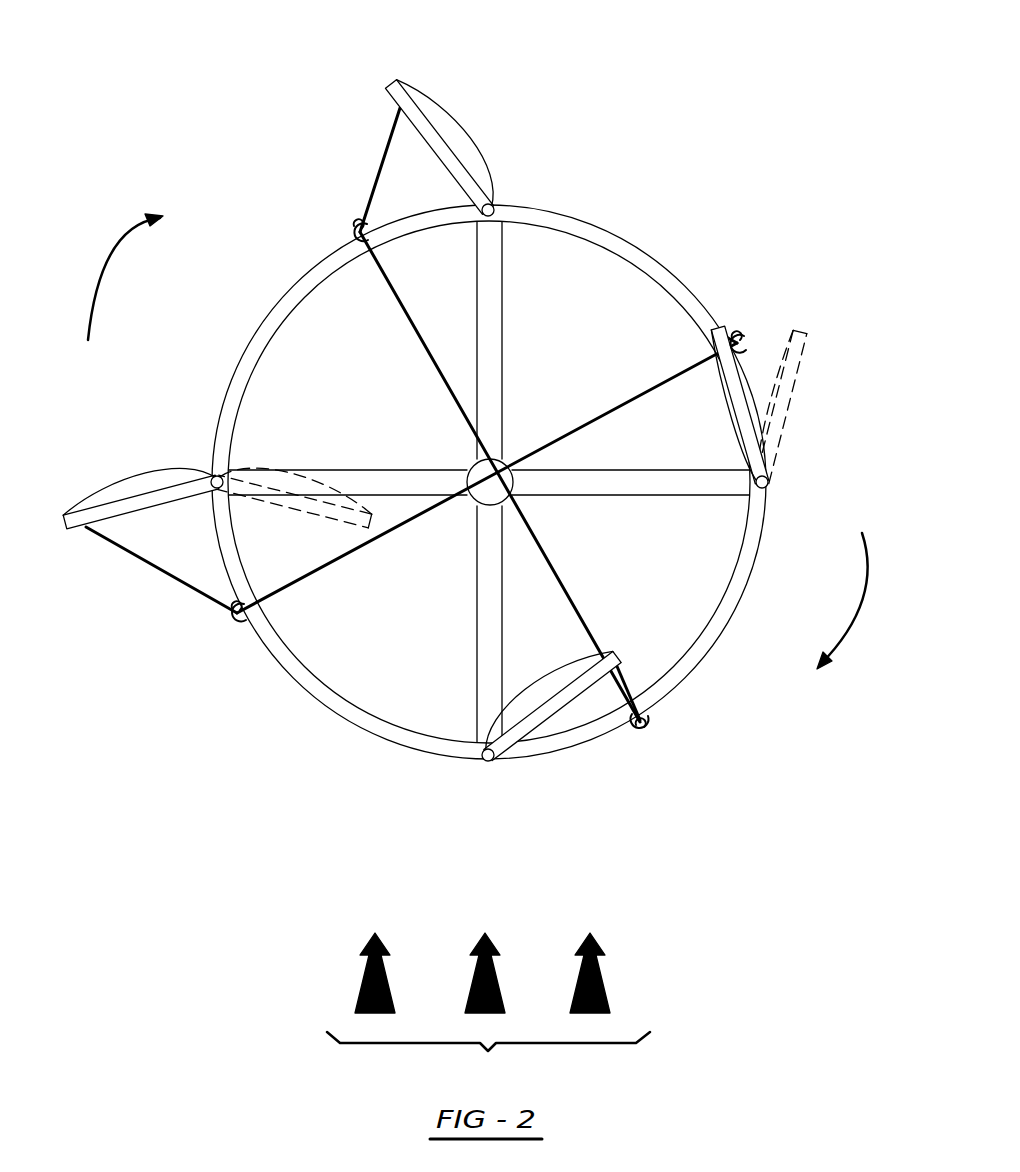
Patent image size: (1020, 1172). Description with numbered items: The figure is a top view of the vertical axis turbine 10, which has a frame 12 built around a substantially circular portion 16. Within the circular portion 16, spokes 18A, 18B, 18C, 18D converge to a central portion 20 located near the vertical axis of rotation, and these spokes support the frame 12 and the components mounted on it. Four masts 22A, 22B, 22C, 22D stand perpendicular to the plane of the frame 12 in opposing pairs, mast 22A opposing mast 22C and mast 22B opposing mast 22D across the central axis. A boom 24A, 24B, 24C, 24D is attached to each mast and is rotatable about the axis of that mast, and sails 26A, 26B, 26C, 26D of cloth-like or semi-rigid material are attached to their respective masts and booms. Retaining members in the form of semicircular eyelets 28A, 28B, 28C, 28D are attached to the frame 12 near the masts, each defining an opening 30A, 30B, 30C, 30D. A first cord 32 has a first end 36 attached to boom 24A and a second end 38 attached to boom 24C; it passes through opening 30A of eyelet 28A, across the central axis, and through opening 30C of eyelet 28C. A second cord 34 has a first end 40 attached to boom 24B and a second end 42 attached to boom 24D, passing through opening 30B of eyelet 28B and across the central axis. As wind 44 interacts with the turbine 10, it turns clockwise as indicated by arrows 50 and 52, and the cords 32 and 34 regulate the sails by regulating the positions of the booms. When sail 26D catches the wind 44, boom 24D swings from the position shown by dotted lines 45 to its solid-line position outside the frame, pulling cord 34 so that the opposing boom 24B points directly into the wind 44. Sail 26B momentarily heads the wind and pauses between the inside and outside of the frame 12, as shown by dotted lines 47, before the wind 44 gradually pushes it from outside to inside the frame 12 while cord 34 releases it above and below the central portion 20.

The vertical axis turbine 10 is at (512, 404).
The frame 12 is at (612, 213).
The substantially circular portion 16 is at (680, 258).
The spoke 18A is at (495, 312).
The spoke 18B is at (662, 478).
The spoke 18C is at (480, 600).
The spoke 18D is at (378, 480).
The central portion 20 is at (490, 500).
The mast 22A is at (498, 205).
The mast 22B is at (770, 482).
The mast 22C is at (490, 765).
The mast 22D is at (217, 482).
The boom 24A is at (388, 82).
The boom 24B is at (735, 347).
The boom 24C is at (612, 650).
The boom 24D is at (56, 530).
The sail 26A is at (433, 92).
The sail 26B is at (790, 410).
The sail 26C is at (565, 663).
The sail 26D is at (160, 470).
The eyelet 28A is at (350, 232).
The eyelet 28B is at (748, 348).
The eyelet 28C is at (652, 728).
The eyelet 28D is at (240, 628).
The opening 30A is at (355, 226).
The opening 30B is at (742, 338).
The opening 30C is at (640, 732).
The opening 30D is at (237, 613).
The first cord 32 is at (388, 276).
The second cord 34 is at (655, 397).
The first end 36 is at (397, 108).
The second end 38 is at (627, 677).
The first end 40 is at (727, 330).
The second end 42 is at (88, 530).
The wind 44 is at (488, 1009).
The dotted lines 45 is at (375, 533).
The dotted lines 47 is at (806, 335).
The arrow 50 is at (115, 250).
The arrow 52 is at (862, 557).